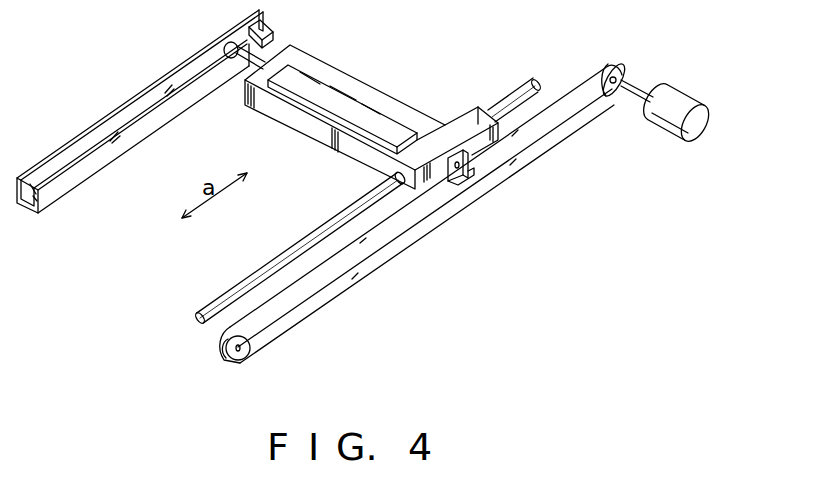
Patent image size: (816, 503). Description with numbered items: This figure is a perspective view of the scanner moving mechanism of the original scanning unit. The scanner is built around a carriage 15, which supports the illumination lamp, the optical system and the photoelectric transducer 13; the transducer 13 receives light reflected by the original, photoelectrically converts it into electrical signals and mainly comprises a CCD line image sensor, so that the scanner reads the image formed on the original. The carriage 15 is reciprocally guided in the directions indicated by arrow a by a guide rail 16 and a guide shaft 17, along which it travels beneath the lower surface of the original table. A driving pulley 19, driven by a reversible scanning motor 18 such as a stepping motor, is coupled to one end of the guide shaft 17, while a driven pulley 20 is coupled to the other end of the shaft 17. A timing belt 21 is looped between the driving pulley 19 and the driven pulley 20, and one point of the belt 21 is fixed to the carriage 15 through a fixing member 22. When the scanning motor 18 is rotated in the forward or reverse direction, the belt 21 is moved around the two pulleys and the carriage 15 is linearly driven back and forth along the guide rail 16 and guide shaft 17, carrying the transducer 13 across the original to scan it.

The photoelectric transducer 13 is at (343, 94).
The carriage 15 is at (403, 112).
The guide rail 16 is at (187, 61).
The guide shaft 17 is at (510, 97).
The scanning motor 18 is at (658, 129).
The driving pulley 19 is at (631, 70).
The driven pulley 20 is at (247, 354).
The timing belt 21 is at (391, 253).
The fixing member 22 is at (471, 172).